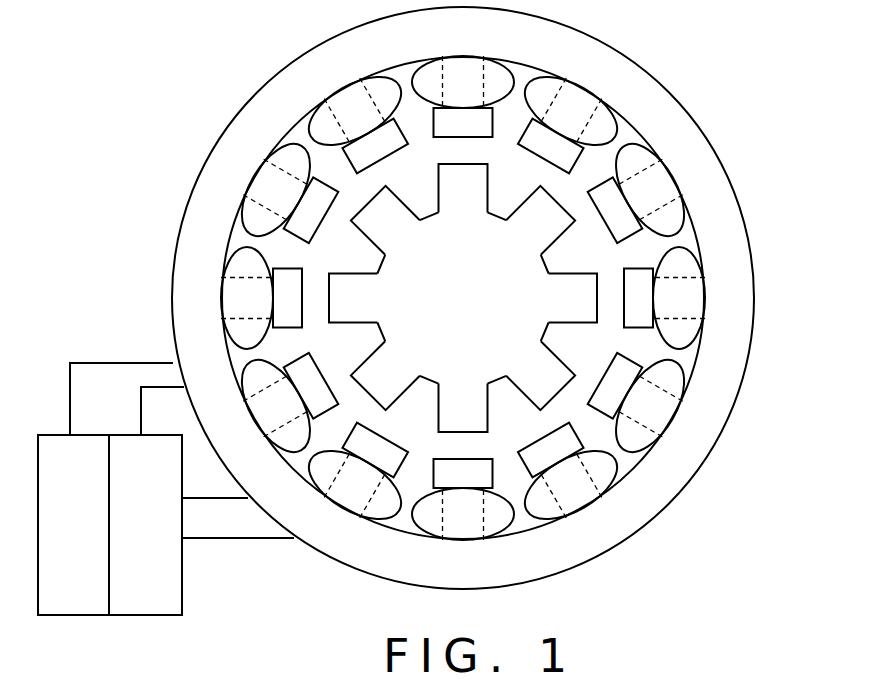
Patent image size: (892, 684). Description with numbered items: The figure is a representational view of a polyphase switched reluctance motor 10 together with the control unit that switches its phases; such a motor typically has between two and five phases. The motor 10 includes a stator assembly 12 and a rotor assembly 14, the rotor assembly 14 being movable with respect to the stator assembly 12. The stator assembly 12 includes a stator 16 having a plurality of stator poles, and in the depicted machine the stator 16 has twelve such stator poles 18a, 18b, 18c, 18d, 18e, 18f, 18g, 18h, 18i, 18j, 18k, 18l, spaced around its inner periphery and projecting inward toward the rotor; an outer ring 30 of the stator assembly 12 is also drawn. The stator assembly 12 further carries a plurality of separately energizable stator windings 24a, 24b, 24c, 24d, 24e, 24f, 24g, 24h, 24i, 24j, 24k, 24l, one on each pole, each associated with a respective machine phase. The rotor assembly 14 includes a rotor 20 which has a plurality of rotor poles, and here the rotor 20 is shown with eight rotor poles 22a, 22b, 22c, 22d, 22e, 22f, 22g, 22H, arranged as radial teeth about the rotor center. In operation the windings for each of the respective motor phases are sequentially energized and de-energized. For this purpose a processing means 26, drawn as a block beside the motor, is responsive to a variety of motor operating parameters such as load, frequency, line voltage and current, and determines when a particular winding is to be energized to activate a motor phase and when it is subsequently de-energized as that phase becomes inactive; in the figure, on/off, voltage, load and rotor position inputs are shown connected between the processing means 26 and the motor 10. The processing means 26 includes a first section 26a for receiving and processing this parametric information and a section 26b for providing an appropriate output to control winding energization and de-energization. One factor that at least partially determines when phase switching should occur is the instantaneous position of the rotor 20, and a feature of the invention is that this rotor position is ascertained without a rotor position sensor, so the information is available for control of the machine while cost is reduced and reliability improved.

The polyphase switched reluctance motor 10 is at (172, 228).
The stator assembly 12 is at (702, 88).
The rotor assembly 14 is at (498, 213).
The stator 16 is at (258, 120).
The stator pole 18a is at (488, 138).
The stator pole 18b is at (530, 146).
The stator pole 18c is at (592, 204).
The stator pole 18d is at (624, 270).
The stator pole 18e is at (614, 360).
The stator pole 18f is at (551, 431).
The stator pole 18g is at (482, 457).
The stator pole 18h is at (387, 436).
The stator pole 18i is at (326, 372).
The stator pole 18j is at (302, 329).
The stator pole 18k is at (330, 228).
The stator pole 18l is at (399, 150).
The rotor 20 is at (452, 312).
The rotor pole 22a is at (472, 166).
The rotor pole 22b is at (551, 215).
The rotor pole 22c is at (586, 289).
The rotor pole 22d is at (542, 382).
The rotor pole 22e is at (466, 428).
The rotor pole 22f is at (372, 385).
The rotor pole 22g is at (332, 302).
The rotor pole 22H is at (373, 218).
The stator winding 24a is at (447, 93).
The stator winding 24b is at (553, 120).
The stator winding 24c is at (630, 199).
The stator winding 24d is at (662, 309).
The stator winding 24e is at (633, 413).
The stator winding 24f is at (553, 495).
The stator winding 24g is at (447, 521).
The stator winding 24h is at (340, 495).
The stator winding 24i is at (262, 413).
The stator winding 24j is at (231, 309).
The stator winding 24k is at (260, 199).
The stator winding 24l is at (340, 120).
The processing means 26 is at (120, 626).
The first section 26a is at (127, 535).
The section 26b is at (52, 535).
The stator ring 30 is at (686, 240).